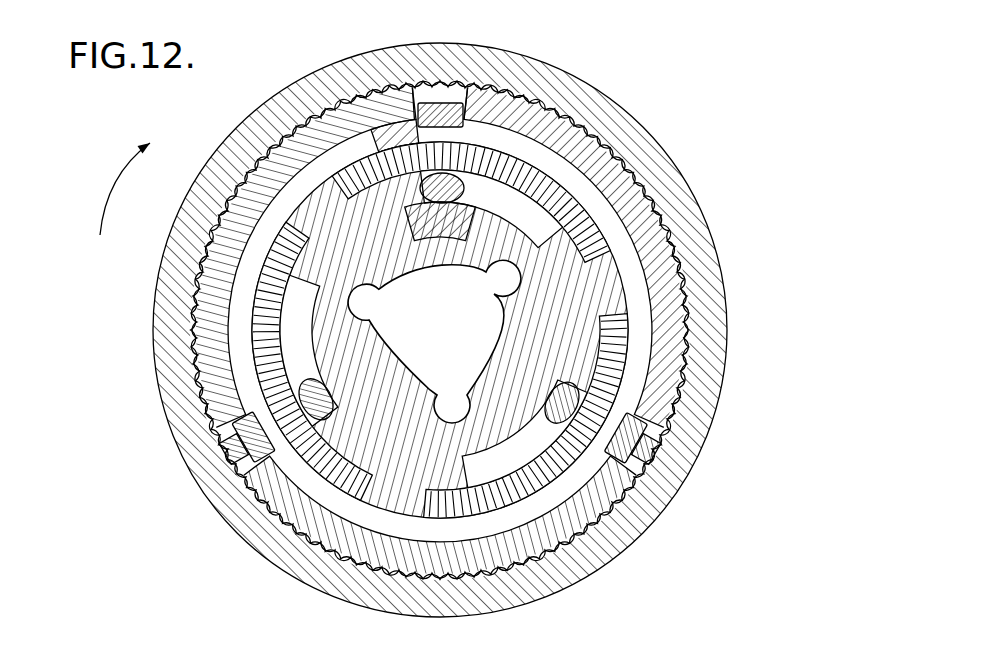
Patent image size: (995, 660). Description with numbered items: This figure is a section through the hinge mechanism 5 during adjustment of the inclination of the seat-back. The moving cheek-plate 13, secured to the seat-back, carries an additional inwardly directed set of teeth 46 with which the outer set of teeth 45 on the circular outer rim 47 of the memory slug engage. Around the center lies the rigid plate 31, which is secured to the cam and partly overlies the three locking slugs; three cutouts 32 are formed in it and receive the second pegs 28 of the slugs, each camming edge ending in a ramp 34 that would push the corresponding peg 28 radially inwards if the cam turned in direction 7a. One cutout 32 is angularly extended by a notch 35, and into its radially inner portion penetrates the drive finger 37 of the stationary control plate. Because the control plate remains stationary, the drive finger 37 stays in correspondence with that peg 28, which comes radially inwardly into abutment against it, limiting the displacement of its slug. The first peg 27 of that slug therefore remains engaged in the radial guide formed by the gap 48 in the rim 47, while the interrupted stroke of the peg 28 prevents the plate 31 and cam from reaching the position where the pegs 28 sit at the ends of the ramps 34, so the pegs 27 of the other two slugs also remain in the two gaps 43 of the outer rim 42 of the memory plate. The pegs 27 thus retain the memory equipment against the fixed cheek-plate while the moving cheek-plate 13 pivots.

The hinge mechanism 5 is at (603, 80).
The direction 7a is at (106, 189).
The moving cheek-plate 13 is at (693, 233).
The first peg 27 is at (445, 112).
The second peg 28 is at (447, 183).
The plate 31 is at (385, 455).
The cutouts 32 is at (543, 240).
The ramp 34 is at (412, 192).
The notch 35 is at (365, 237).
The drive finger 37 is at (540, 170).
The outer rim 42 is at (600, 498).
The gaps 43 is at (652, 452).
The outer set of teeth 45 is at (357, 103).
The additional inwardly directed set of teeth 46 is at (650, 197).
The circular outer rim 47 is at (395, 135).
The gap 48 is at (430, 97).